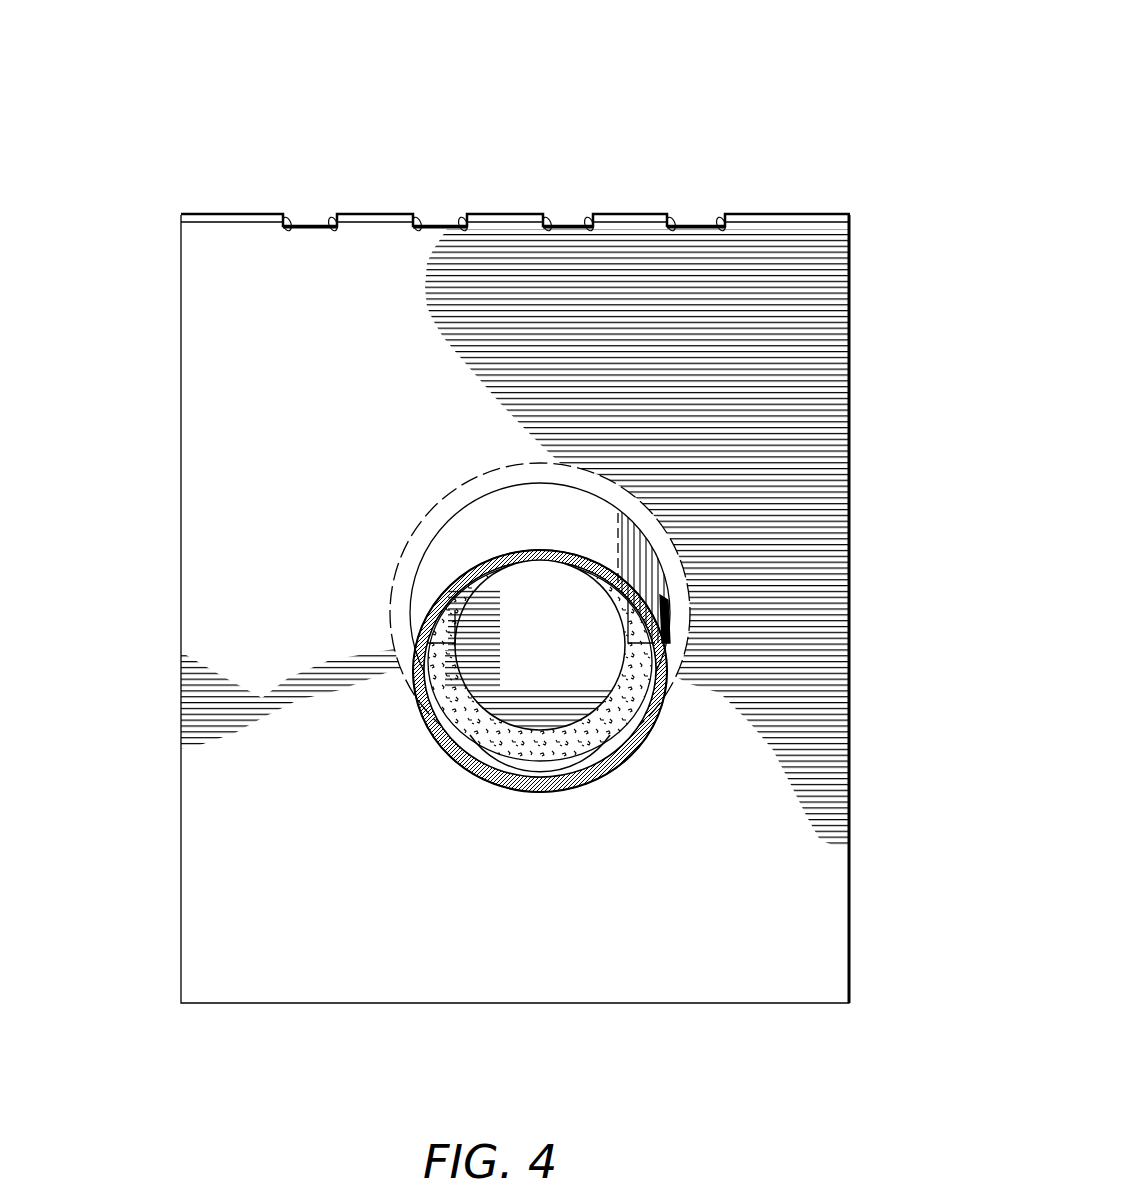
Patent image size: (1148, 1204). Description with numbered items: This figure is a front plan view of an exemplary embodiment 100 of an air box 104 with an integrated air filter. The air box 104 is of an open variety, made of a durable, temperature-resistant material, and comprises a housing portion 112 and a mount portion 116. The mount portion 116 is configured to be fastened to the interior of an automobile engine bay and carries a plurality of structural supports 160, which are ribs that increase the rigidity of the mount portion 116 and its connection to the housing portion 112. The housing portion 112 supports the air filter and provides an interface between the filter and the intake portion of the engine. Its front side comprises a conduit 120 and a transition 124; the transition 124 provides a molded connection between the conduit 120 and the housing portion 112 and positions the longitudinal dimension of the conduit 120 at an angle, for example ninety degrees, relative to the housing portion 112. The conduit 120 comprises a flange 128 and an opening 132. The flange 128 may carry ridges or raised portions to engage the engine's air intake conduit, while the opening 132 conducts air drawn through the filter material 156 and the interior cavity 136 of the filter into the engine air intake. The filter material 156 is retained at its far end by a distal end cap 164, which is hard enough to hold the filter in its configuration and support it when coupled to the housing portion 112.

The exemplary embodiment 100 is at (800, 64).
The air box 104 is at (645, 1034).
The housing portion 112 is at (814, 336).
The mount portion 116 is at (383, 170).
The conduit 120 is at (436, 567).
The transition 124 is at (450, 496).
The flange 128 is at (432, 607).
The opening 132 is at (455, 739).
The interior cavity 136 is at (569, 737).
The filter material 156 is at (615, 716).
The structural supports 160 is at (510, 214).
The distal end cap 164 is at (553, 608).